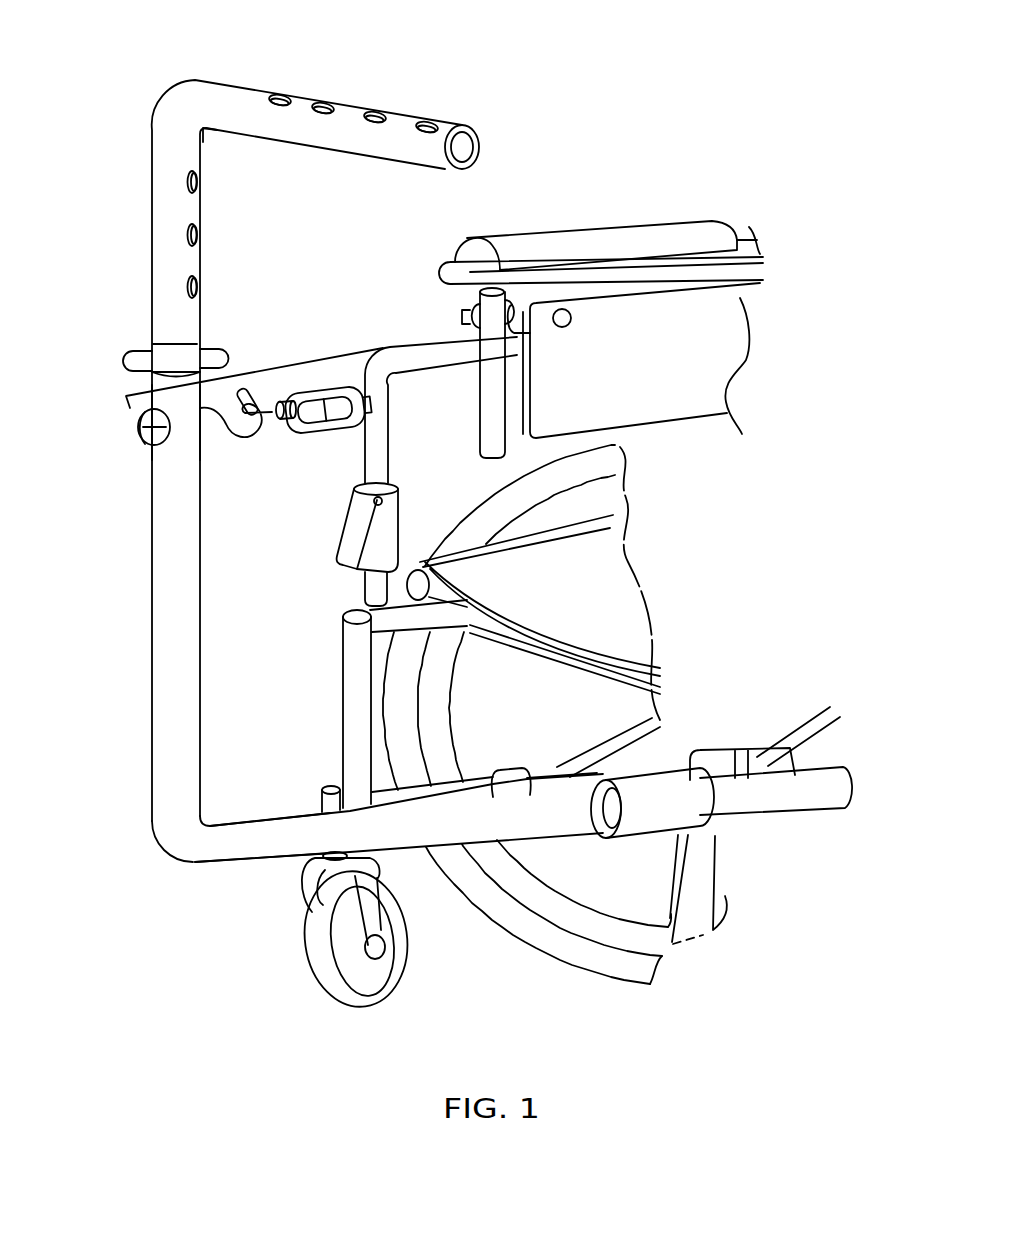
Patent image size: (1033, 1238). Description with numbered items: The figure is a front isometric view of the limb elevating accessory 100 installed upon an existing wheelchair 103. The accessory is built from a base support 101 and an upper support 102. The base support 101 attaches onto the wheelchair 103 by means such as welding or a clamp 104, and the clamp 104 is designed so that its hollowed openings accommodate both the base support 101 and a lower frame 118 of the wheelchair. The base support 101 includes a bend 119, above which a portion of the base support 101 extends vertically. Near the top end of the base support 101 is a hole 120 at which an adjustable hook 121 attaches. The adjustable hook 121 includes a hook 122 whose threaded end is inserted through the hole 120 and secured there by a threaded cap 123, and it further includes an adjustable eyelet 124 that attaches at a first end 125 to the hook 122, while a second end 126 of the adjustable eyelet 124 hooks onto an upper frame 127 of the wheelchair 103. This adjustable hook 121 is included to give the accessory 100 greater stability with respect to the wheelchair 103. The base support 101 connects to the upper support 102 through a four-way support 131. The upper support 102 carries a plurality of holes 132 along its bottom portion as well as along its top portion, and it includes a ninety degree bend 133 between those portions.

The limb elevating accessory 100 is at (572, 165).
The base support 101 is at (238, 850).
The upper support 102 is at (183, 98).
The wheelchair 103 is at (612, 574).
The clamp 104 is at (697, 815).
The lower frame 118 is at (450, 793).
The bend 119 is at (187, 838).
The hole 120 is at (178, 426).
The adjustable hook 121 is at (275, 367).
The hook 122 is at (240, 436).
The threaded cap 123 is at (146, 429).
The adjustable eyelet 124 is at (336, 421).
The first end 125 is at (292, 415).
The second end 126 is at (393, 406).
The upper frame 127 is at (385, 466).
The 4-way support 131 is at (128, 353).
The holes 132 is at (292, 66).
The 90 degree bend 133 is at (224, 141).